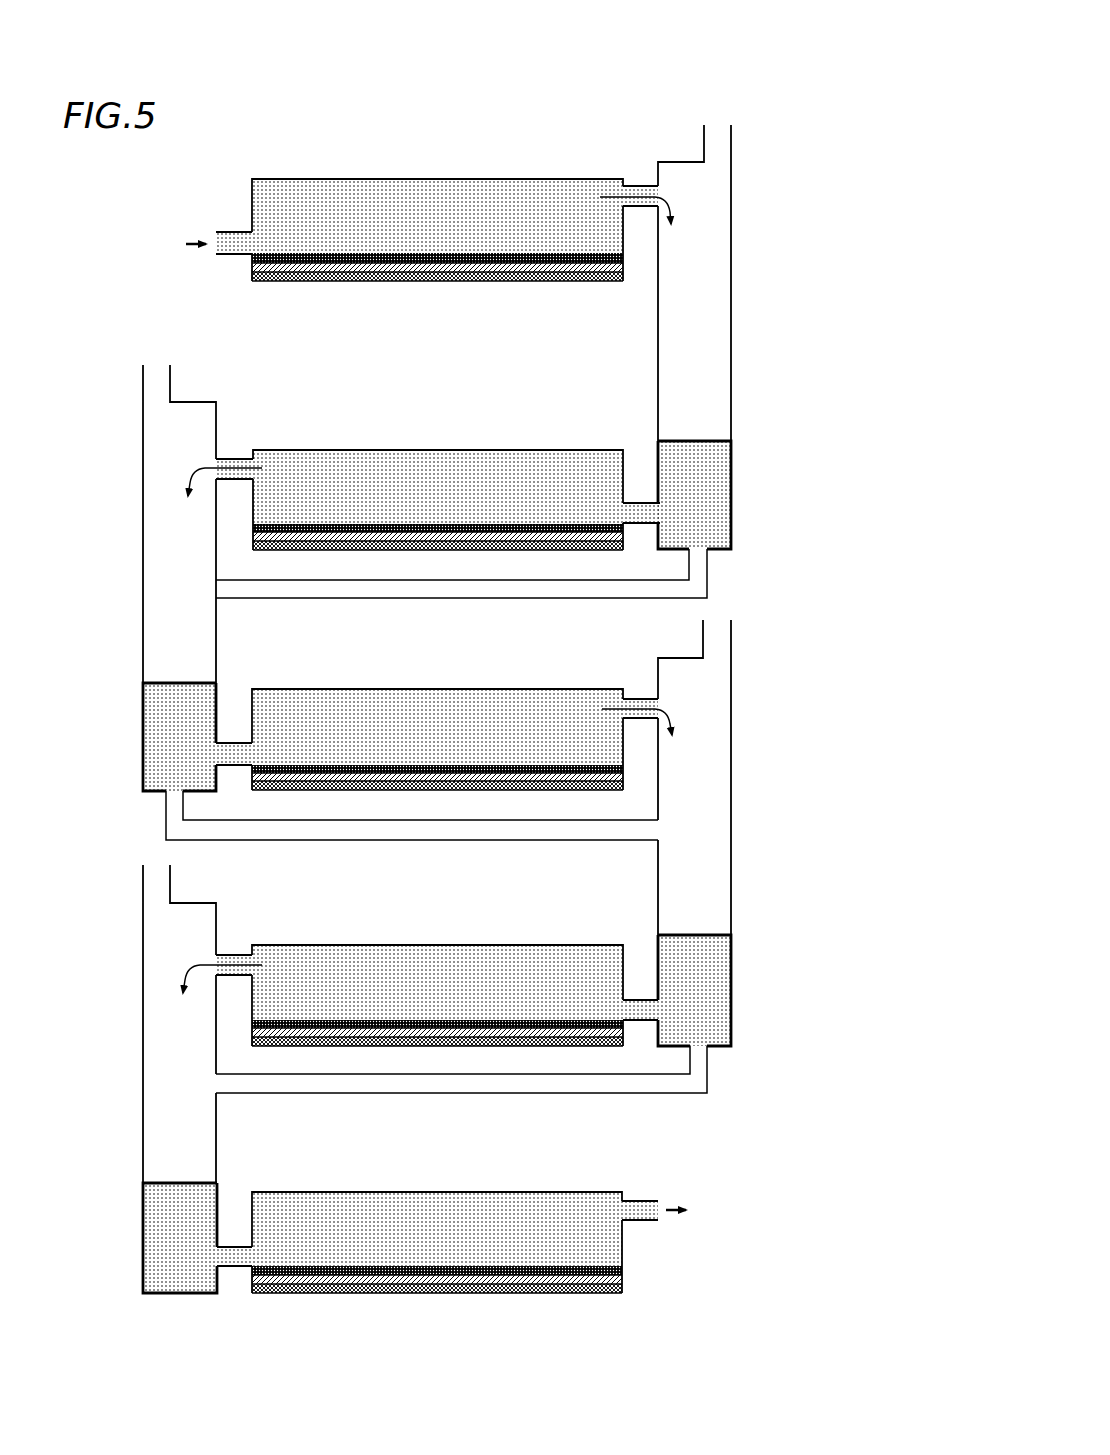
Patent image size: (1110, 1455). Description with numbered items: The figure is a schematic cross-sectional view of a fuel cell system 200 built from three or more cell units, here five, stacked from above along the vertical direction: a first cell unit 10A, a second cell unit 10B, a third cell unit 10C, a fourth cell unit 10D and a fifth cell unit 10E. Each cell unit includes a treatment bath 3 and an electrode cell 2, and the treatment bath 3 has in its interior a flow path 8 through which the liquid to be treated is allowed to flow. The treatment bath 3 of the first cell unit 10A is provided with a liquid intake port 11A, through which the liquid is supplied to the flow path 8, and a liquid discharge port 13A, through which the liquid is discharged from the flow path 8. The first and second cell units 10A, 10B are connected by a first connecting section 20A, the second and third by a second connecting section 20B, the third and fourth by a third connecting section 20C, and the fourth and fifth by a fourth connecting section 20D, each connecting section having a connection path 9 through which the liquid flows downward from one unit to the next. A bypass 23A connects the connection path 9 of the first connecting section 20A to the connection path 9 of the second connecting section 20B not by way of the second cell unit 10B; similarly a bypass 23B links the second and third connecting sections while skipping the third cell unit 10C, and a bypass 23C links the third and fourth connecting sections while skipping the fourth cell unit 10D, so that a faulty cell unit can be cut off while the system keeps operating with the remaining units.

The fuel cell system 200 is at (782, 84).
The treatment bath 3 is at (430, 179).
The flow path 8 is at (377, 222).
The electrode cell 2 is at (250, 270).
The connection path 9 is at (706, 366).
The first cell unit 10A is at (430, 193).
The second cell unit 10B is at (596, 428).
The third cell unit 10C is at (598, 684).
The fourth cell unit 10D is at (594, 924).
The fifth cell unit 10E is at (592, 1174).
The liquid intake port 11A is at (233, 232).
The liquid discharge port 13A is at (641, 186).
The first connecting section 20A is at (772, 214).
The second connecting section 20B is at (126, 492).
The third connecting section 20C is at (754, 772).
The fourth connecting section 20D is at (106, 1050).
The bypass 23A is at (712, 568).
The bypass 23B is at (166, 808).
The bypass 23C is at (710, 1072).